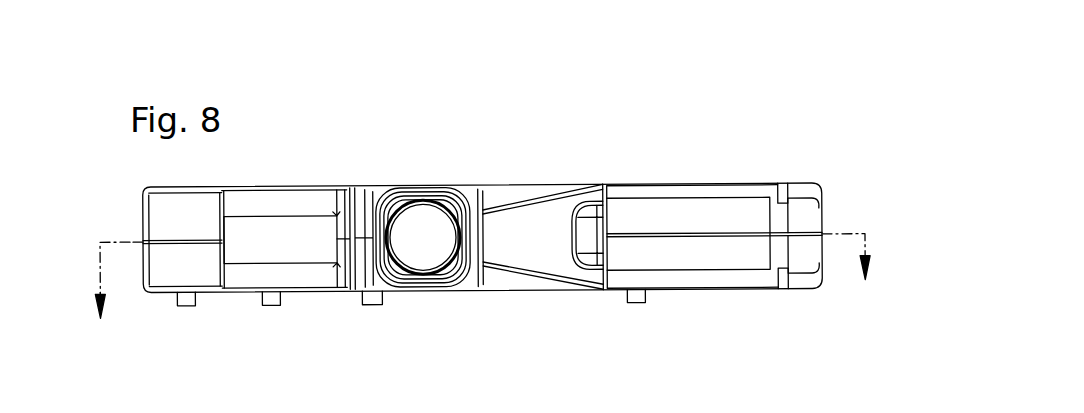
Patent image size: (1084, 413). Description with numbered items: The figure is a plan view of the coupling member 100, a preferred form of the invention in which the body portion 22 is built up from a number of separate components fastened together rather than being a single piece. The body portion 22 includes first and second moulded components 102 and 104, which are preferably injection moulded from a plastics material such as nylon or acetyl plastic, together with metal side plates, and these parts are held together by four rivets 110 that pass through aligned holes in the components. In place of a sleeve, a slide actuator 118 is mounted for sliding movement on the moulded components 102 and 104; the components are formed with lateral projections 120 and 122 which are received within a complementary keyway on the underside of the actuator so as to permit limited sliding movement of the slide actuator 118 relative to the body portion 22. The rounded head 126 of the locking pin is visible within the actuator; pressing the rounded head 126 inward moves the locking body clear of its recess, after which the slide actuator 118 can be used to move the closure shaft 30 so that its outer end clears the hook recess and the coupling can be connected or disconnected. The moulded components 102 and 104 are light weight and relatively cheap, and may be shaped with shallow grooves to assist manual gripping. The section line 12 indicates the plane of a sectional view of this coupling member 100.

The coupling member 100 is at (482, 210).
The closure shaft 30 is at (276, 237).
The body portion 22 is at (626, 173).
The second moulded component 104 is at (693, 166).
The lateral projection 122 is at (760, 191).
The section line 12 is at (487, 275).
The rivets 110 is at (185, 314).
The rounded head 126 is at (421, 256).
The slide actuator 118 is at (517, 281).
The first moulded component 102 is at (698, 296).
The lateral projection 120 is at (762, 259).